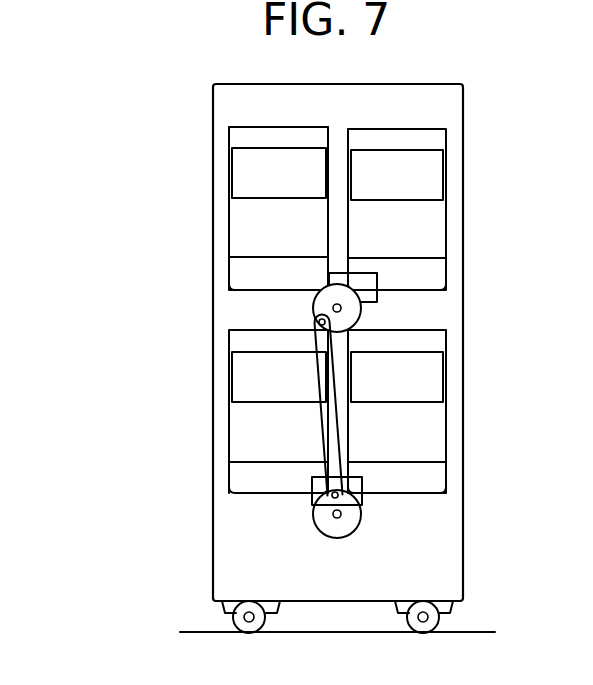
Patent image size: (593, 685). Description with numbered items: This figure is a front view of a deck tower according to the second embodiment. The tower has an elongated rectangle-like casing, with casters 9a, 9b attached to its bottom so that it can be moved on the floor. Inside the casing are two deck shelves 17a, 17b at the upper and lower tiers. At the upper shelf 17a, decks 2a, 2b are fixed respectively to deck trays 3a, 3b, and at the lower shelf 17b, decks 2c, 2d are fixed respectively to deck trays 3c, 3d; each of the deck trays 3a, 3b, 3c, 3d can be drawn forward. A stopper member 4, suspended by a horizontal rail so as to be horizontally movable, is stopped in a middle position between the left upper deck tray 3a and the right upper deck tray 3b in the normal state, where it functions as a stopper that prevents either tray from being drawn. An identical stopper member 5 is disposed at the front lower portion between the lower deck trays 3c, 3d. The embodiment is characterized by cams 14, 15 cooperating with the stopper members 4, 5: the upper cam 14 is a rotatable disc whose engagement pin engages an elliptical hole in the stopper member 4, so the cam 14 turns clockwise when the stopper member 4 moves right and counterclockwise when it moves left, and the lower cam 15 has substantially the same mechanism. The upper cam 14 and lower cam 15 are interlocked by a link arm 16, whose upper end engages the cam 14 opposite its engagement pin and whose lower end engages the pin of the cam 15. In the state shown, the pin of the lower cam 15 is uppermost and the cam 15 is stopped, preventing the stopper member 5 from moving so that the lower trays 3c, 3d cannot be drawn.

The deck shelf 17a is at (394, 124).
The deck shelf 17b is at (250, 495).
The deck 2a is at (243, 225).
The deck 2b is at (428, 172).
The deck 2c is at (247, 432).
The deck 2d is at (427, 425).
The deck tray 3a is at (247, 272).
The deck tray 3b is at (428, 275).
The deck tray 3c is at (248, 479).
The deck tray 3d is at (423, 480).
The stopper member 4 is at (378, 294).
The stopper member 5 is at (362, 485).
The cam 14 is at (313, 305).
The cam 15 is at (317, 528).
The link arm 16 is at (335, 413).
The caster 9a is at (233, 625).
The caster 9b is at (437, 632).